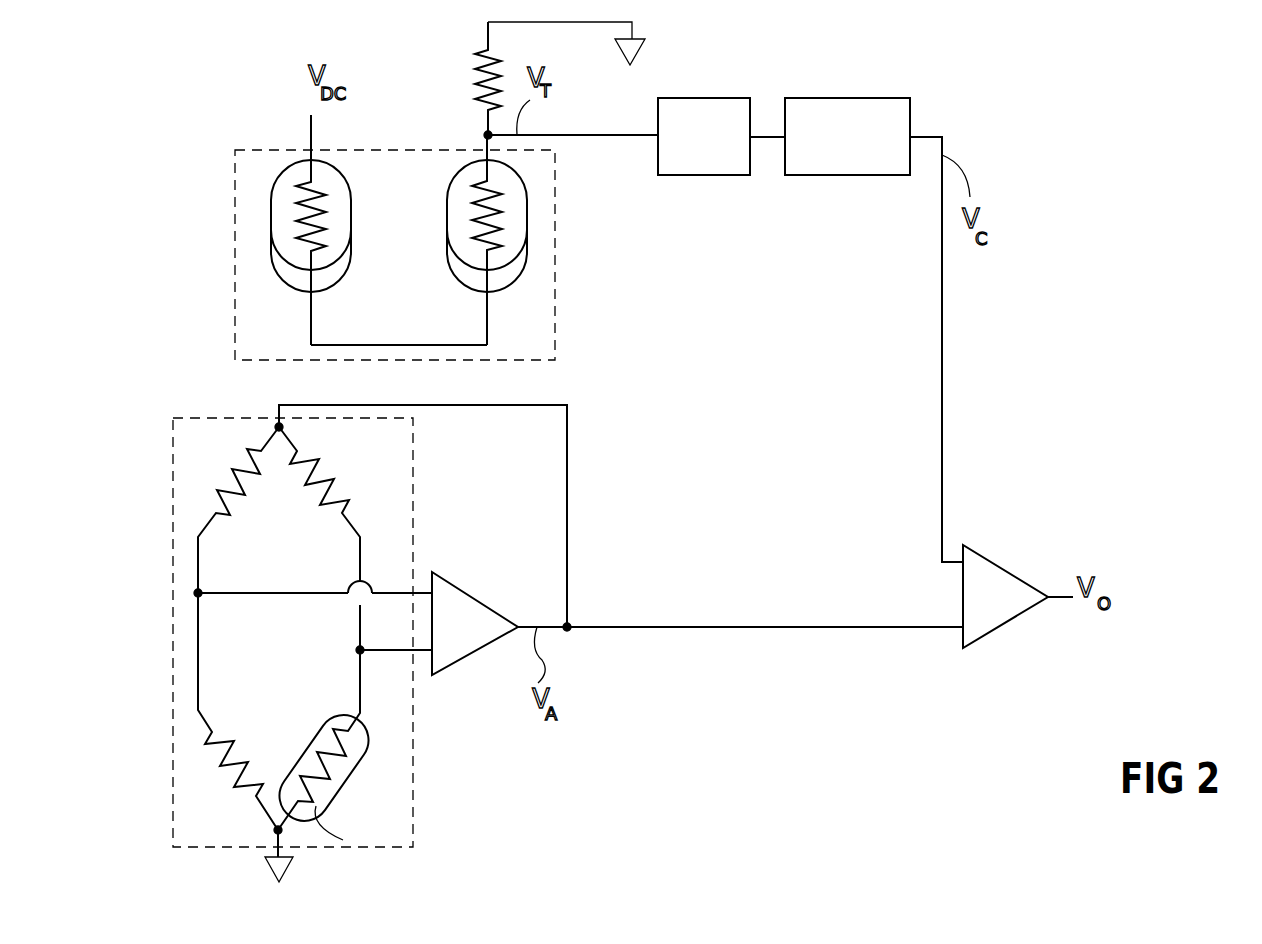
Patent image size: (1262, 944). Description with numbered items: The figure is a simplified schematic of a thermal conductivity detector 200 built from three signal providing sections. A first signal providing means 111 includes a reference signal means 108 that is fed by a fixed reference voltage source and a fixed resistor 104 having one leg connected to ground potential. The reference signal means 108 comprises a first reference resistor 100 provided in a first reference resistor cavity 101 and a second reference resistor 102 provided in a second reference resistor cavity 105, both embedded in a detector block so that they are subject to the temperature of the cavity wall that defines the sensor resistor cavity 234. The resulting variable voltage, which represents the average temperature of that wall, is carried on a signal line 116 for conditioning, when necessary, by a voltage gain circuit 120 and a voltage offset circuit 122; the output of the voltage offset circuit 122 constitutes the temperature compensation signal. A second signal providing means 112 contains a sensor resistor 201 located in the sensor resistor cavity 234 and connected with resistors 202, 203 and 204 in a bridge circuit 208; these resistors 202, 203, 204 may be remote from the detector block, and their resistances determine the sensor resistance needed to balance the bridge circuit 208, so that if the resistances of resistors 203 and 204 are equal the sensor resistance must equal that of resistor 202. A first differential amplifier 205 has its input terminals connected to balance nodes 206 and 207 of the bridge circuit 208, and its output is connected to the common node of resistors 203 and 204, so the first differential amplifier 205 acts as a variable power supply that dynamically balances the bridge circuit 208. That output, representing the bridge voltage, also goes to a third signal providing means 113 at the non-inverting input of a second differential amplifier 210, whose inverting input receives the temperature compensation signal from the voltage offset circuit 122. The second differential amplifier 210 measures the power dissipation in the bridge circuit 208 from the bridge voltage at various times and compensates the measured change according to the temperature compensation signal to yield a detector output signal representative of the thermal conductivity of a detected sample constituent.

The first reference resistor 100 is at (333, 203).
The first reference resistor cavity 101 is at (325, 288).
The second reference resistor 102 is at (530, 187).
The fixed resistor 104 is at (478, 56).
The second reference resistor cavity 105 is at (497, 285).
The reference signal means 108 is at (555, 355).
The first signal providing means 111 is at (757, 300).
The second signal providing means 112 is at (608, 673).
The third signal providing means 113 is at (1048, 468).
The signal line 116 is at (580, 135).
The voltage gain circuit 120 is at (672, 175).
The voltage offset circuit 122 is at (797, 175).
The thermal conductivity detector 200 is at (962, 662).
The sensor resistor 201 is at (352, 755).
The resistor 202 is at (238, 757).
The resistor 203 is at (330, 455).
The resistor 204 is at (232, 470).
The first differential amplifier 205 is at (480, 600).
The balance node 206 is at (198, 593).
The balance node 207 is at (360, 648).
The bridge circuit 208 is at (408, 823).
The second differential amplifier 210 is at (1013, 570).
The sensor resistor cavity 234 is at (351, 827).